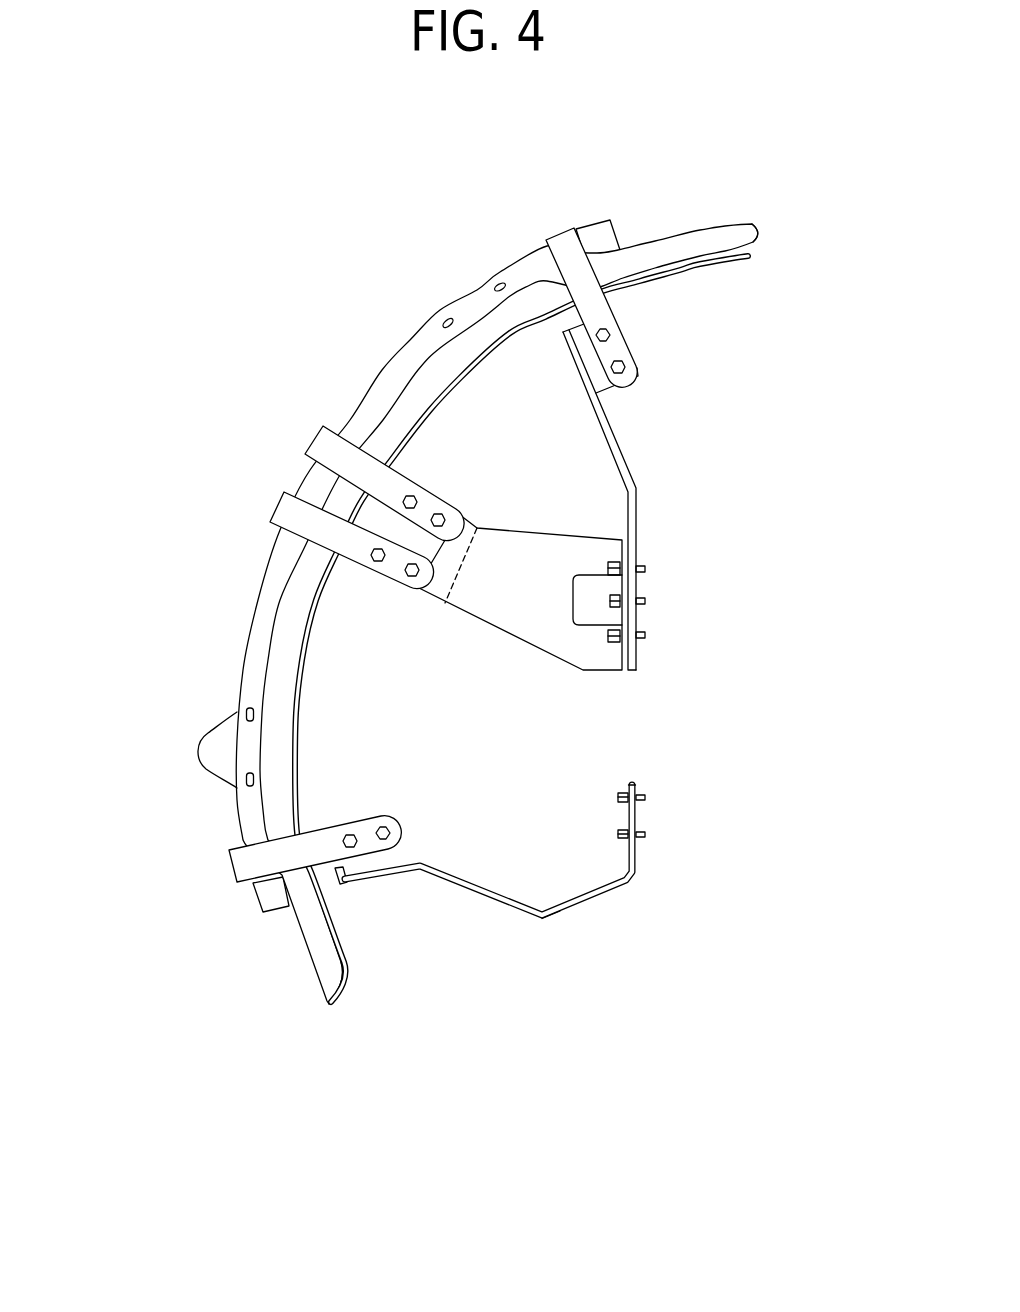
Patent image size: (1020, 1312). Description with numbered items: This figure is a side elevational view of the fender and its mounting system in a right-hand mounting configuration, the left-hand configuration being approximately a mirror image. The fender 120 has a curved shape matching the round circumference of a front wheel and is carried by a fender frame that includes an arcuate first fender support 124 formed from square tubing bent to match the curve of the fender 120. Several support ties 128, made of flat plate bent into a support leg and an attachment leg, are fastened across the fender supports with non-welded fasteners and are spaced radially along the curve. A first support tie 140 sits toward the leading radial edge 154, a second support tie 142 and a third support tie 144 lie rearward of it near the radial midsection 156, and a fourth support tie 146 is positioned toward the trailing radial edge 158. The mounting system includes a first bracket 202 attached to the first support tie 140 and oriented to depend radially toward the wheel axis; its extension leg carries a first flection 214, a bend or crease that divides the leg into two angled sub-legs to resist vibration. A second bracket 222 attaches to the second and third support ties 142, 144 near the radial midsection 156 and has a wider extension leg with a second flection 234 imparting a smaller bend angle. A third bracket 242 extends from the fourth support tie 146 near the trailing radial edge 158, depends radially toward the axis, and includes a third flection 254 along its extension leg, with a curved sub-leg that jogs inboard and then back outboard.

The fender 120 is at (475, 634).
The first fender support 124 is at (497, 273).
The support ties 128 is at (615, 308).
The first support tie 140 is at (227, 870).
The second support tie 142 is at (274, 506).
The third support tie 144 is at (315, 436).
The fourth support tie 146 is at (573, 252).
The leading radial edge 154 is at (330, 1007).
The radial midsection 156 is at (307, 468).
The trailing radial edge 158 is at (757, 232).
The first bracket 202 is at (573, 945).
The first flection 214 is at (541, 921).
The second bracket 222 is at (565, 604).
The second flection 234 is at (477, 527).
The third bracket 242 is at (720, 497).
The third flection 254 is at (637, 502).